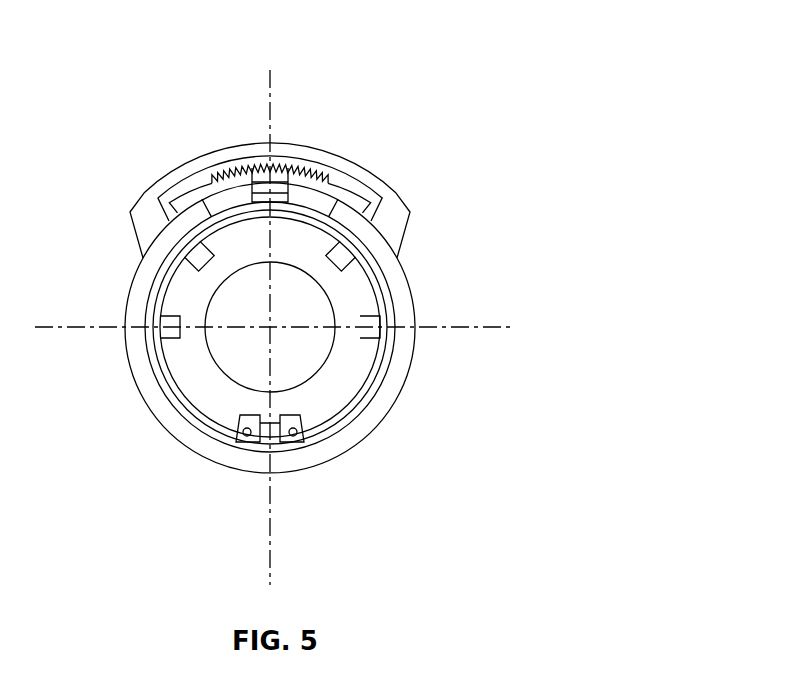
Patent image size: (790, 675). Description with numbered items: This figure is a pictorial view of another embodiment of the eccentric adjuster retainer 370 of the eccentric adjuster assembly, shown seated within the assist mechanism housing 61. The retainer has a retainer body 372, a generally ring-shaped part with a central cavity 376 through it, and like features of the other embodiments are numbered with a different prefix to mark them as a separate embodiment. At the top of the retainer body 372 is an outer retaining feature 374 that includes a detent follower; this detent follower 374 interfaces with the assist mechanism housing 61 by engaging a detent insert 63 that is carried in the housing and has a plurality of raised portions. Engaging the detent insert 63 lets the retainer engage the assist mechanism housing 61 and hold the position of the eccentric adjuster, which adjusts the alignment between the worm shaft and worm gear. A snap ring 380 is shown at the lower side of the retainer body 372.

The eccentric adjuster retainer 370 is at (129, 37).
The retainer body 372 is at (320, 397).
The assist mechanism housing 61 is at (367, 167).
The detent insert 63 is at (223, 166).
The outer retaining feature 374 is at (273, 164).
The cavity 376 is at (313, 345).
The snap ring 380 is at (247, 437).